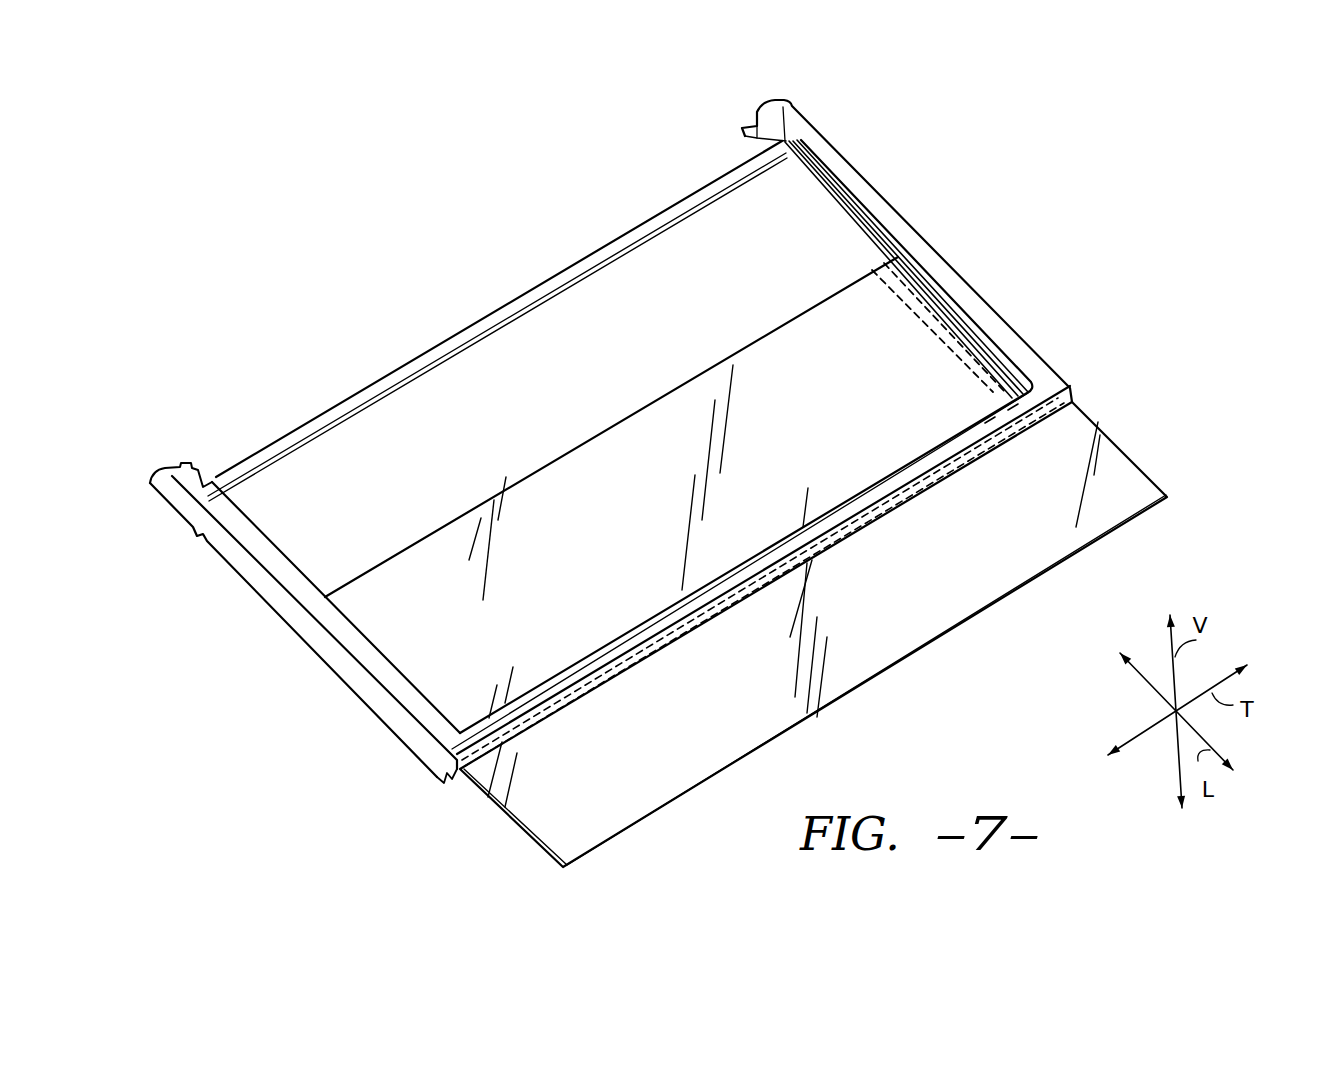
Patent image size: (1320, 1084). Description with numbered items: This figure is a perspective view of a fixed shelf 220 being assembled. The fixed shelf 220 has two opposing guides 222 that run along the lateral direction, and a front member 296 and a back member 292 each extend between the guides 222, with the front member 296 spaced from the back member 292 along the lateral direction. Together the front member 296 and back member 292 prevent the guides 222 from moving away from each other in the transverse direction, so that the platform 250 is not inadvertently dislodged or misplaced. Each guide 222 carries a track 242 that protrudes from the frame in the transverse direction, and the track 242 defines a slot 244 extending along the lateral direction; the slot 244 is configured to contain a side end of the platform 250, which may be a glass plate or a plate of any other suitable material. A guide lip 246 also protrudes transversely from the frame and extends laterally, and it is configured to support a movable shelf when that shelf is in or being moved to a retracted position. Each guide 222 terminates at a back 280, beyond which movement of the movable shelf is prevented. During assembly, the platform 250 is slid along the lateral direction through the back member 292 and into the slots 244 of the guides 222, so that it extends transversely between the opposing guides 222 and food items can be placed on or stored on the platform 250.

The fixed shelf 220 is at (698, 356).
The guide 222 is at (960, 292).
The track 242 is at (840, 170).
The slot 244 is at (815, 181).
The guide lip 246 is at (820, 217).
The platform 250 is at (1117, 487).
The back 280 is at (420, 779).
The back member 292 is at (980, 428).
The front member 296 is at (457, 338).